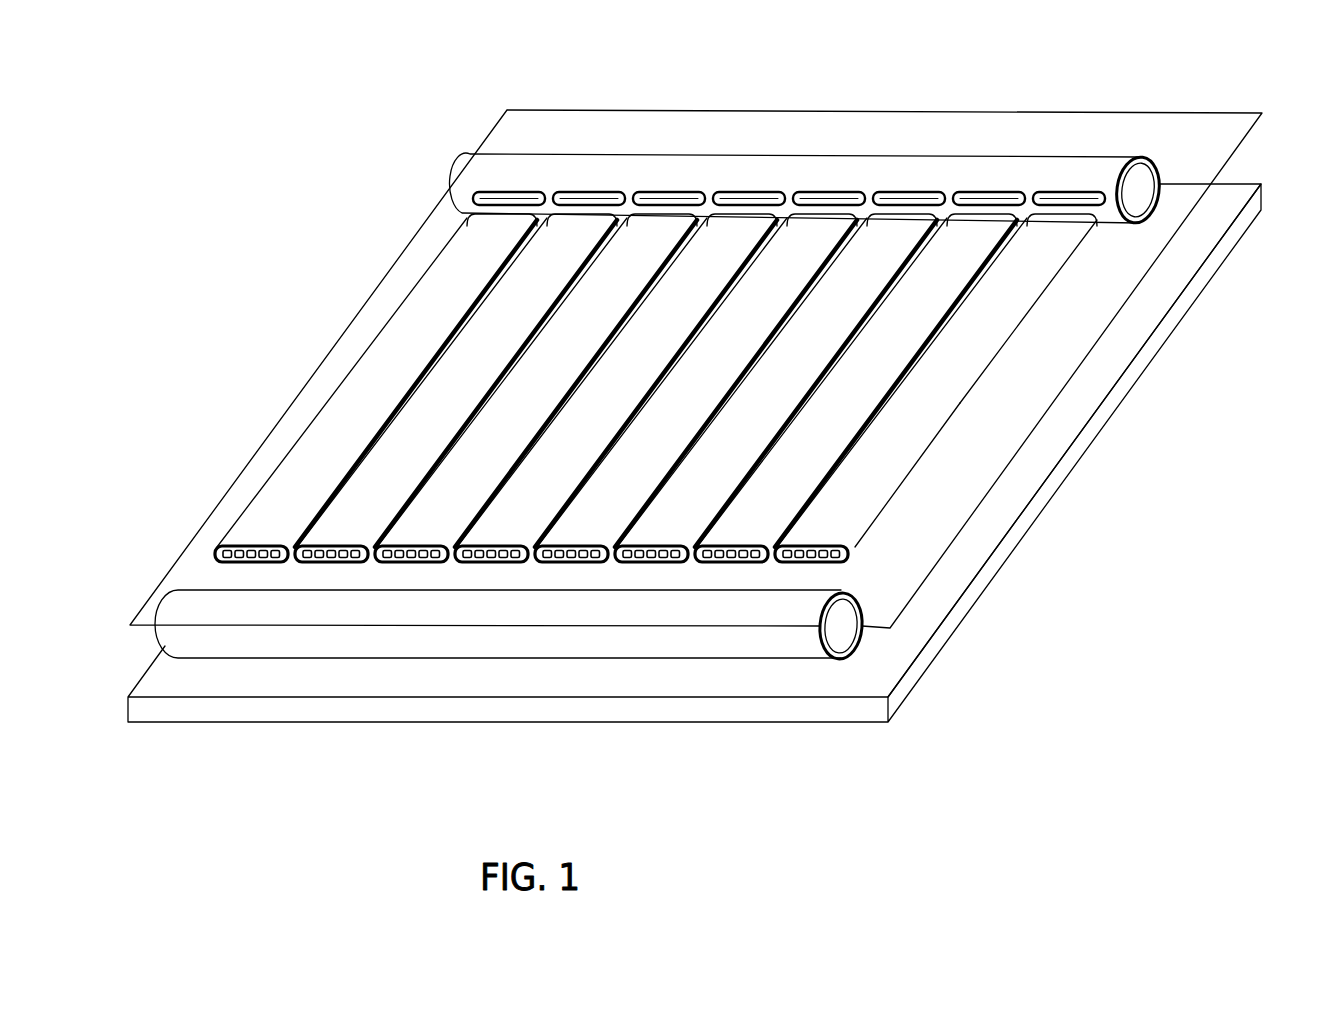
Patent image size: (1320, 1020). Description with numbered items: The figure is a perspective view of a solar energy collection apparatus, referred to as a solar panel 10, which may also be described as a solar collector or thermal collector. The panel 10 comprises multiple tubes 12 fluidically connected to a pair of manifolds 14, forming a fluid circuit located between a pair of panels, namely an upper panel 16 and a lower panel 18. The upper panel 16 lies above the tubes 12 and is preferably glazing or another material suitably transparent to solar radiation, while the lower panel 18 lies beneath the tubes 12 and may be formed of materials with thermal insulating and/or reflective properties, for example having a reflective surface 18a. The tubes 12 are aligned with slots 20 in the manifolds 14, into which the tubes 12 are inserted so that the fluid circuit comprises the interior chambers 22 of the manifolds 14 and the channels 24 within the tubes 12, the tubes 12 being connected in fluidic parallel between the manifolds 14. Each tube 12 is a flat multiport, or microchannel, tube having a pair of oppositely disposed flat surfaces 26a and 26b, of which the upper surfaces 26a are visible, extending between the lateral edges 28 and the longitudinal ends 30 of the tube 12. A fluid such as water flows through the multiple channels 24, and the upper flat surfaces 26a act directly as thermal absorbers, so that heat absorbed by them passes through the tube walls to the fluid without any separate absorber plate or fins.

The solar panel 10 is at (294, 110).
The tubes 12 is at (383, 348).
The manifolds 14 is at (895, 166).
The upper panel 16 is at (1128, 122).
The lower panel 18 is at (945, 638).
The reflective surface 18a is at (1018, 517).
The slots 20 is at (1068, 197).
The interior chambers 22 is at (1140, 200).
The channels 24 is at (492, 563).
The upper flat surface 26a is at (935, 402).
The lower flat surface 26b is at (890, 462).
The lateral edges 28 is at (953, 318).
The longitudinal ends 30 is at (588, 214).